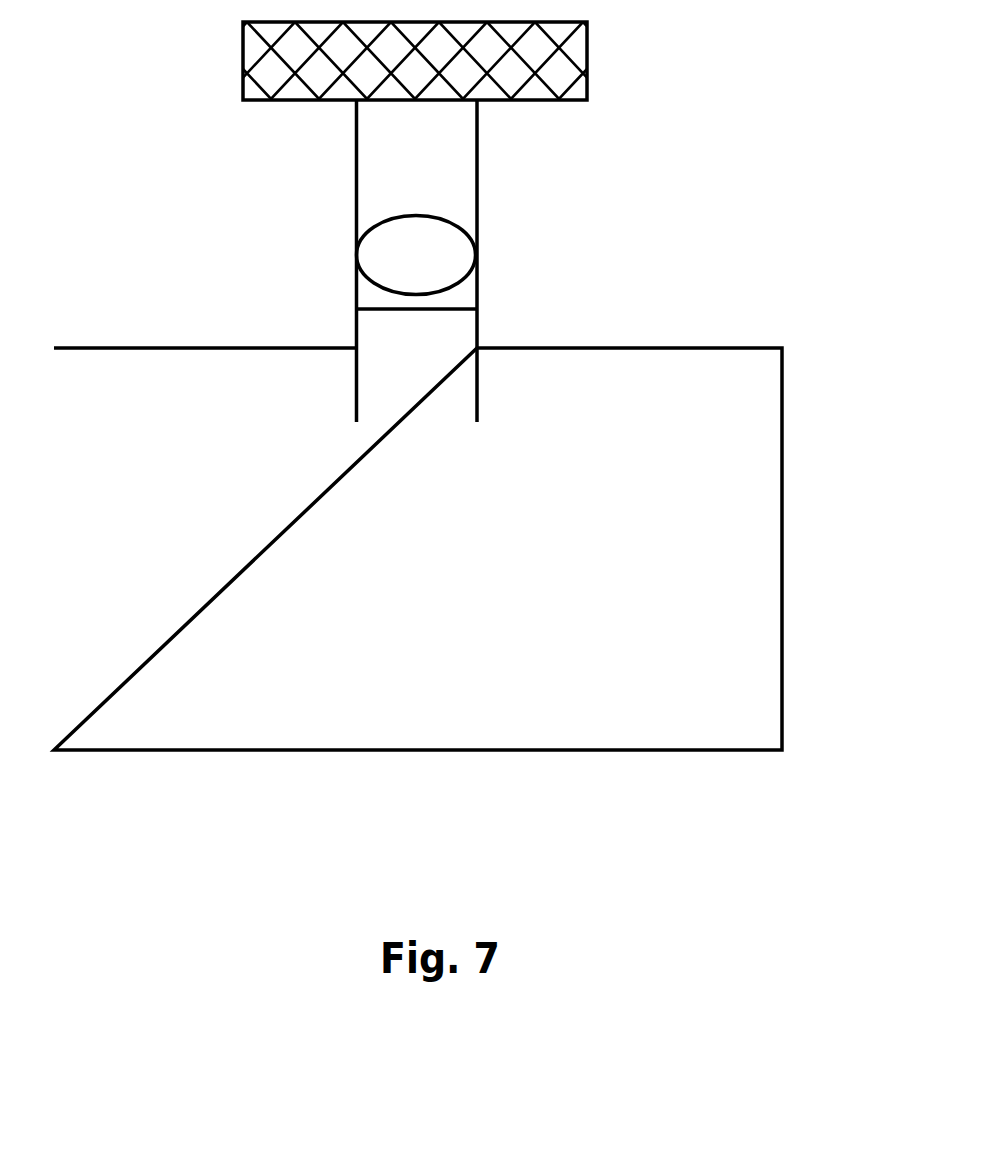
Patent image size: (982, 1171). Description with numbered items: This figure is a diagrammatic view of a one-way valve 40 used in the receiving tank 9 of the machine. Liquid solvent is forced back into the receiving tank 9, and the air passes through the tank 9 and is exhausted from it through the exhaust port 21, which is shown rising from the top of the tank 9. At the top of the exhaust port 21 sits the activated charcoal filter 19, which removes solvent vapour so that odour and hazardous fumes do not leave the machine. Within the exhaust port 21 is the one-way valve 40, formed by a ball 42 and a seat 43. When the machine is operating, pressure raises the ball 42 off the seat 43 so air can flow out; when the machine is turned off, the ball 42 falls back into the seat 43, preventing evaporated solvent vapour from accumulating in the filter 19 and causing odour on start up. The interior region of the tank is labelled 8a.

The activated charcoal filter 19 is at (587, 62).
The exhaust port 21 is at (447, 153).
The one-way valve 40 is at (310, 253).
The ball 42 is at (472, 235).
The seat 43 is at (467, 289).
The receiving tank 9 is at (782, 545).
The chamber 8a is at (748, 685).